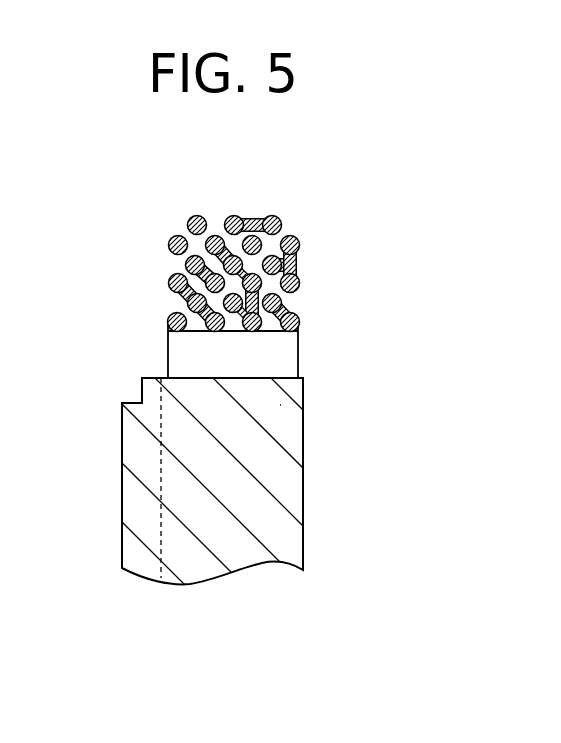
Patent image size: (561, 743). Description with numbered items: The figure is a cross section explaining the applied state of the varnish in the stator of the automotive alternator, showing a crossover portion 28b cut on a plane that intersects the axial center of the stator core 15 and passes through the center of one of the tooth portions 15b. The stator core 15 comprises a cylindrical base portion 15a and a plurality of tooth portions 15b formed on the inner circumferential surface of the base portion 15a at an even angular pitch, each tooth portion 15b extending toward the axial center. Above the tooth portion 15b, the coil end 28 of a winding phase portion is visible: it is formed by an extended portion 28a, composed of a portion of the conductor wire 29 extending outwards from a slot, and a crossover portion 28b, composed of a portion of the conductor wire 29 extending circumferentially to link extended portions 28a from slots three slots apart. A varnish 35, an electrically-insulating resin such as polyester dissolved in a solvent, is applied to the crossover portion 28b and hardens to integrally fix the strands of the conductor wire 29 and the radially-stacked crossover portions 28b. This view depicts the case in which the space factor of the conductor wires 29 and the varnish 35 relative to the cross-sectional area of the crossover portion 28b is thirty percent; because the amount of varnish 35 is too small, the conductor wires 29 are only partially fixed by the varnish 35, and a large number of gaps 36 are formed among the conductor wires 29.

The stator core 15 is at (250, 473).
The cylindrical base portion 15a is at (132, 441).
The tooth portion 15b is at (280, 405).
The coil end 28 is at (212, 284).
The extended portion 28a is at (168, 348).
The crossover portion 28b is at (155, 251).
The conductor wire 29 is at (297, 237).
The varnish 35 is at (296, 263).
The gap 36 is at (271, 246).